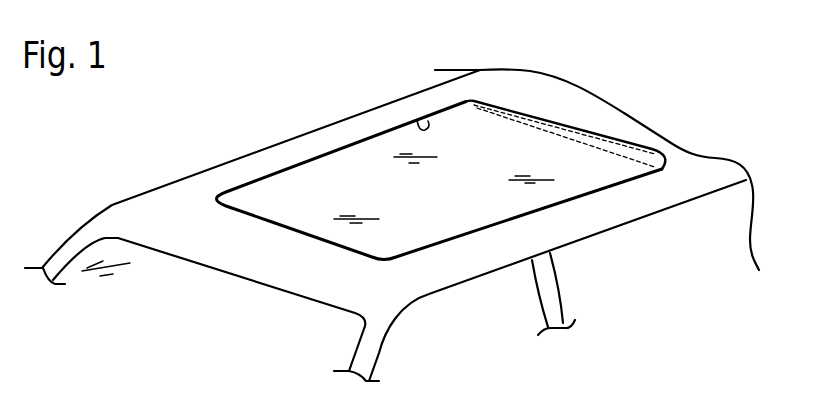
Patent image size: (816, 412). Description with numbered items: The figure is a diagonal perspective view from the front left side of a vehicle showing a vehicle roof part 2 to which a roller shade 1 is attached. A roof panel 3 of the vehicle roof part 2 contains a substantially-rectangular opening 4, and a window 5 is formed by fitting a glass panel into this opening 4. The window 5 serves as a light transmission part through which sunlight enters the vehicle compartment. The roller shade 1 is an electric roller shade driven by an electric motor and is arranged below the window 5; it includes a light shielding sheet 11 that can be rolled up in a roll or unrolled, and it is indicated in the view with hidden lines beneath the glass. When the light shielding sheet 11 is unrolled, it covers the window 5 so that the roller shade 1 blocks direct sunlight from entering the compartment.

The roller shade 1 is at (604, 136).
The vehicle roof part 2 is at (191, 174).
The roof panel 3 is at (241, 170).
The opening 4 is at (417, 120).
The window 5 is at (382, 134).
The light shielding sheet 11 is at (589, 177).